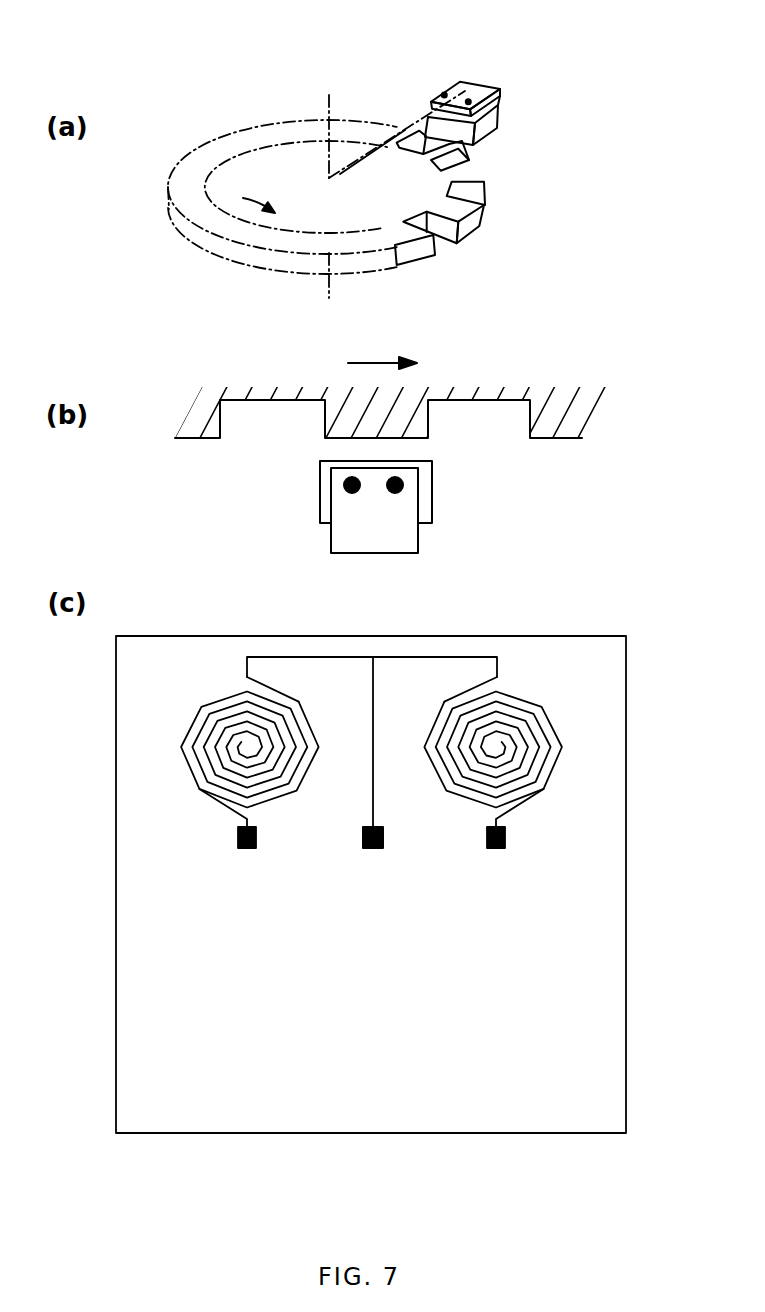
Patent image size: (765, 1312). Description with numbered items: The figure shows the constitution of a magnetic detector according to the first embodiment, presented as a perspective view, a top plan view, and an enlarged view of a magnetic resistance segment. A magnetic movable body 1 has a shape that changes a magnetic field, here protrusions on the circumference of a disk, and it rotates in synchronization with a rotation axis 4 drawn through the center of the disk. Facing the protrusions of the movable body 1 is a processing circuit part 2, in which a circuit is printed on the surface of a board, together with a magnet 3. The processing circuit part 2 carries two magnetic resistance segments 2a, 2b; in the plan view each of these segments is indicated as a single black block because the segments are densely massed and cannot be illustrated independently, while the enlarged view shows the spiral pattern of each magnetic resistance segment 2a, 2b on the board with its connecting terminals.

The magnetic movable body 1 is at (420, 254).
The processing circuit part 2 is at (500, 90).
The magnetic resistance segment 2a is at (469, 98).
The magnetic resistance segment 2b is at (445, 92).
The magnet 3 is at (490, 127).
The rotation axis 4 is at (330, 105).